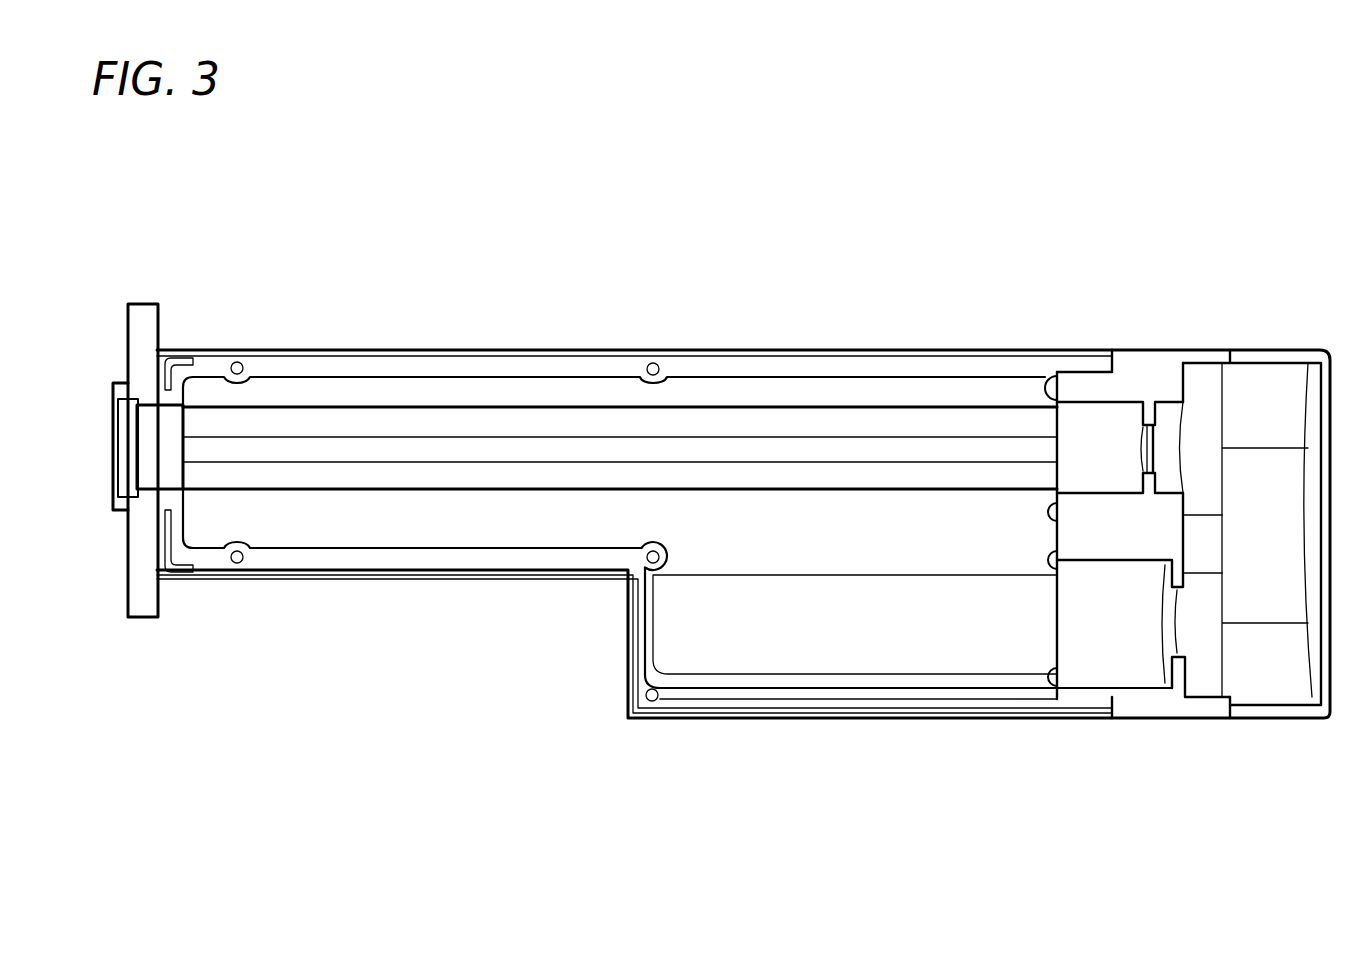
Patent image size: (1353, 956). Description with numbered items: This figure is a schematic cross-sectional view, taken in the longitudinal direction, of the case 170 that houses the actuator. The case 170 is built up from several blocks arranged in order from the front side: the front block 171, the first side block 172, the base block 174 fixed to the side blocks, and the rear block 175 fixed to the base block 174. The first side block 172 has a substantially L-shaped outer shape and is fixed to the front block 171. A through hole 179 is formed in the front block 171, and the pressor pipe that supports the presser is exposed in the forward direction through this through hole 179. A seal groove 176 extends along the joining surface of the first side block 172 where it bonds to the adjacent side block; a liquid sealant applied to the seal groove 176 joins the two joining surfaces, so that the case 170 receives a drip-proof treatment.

The case 170 is at (316, 244).
The front block 171 is at (132, 305).
The first side block 172 is at (567, 348).
The base block 174 is at (1148, 713).
The rear block 175 is at (1270, 713).
The seal groove 176 is at (172, 357).
The through hole 179 is at (110, 452).